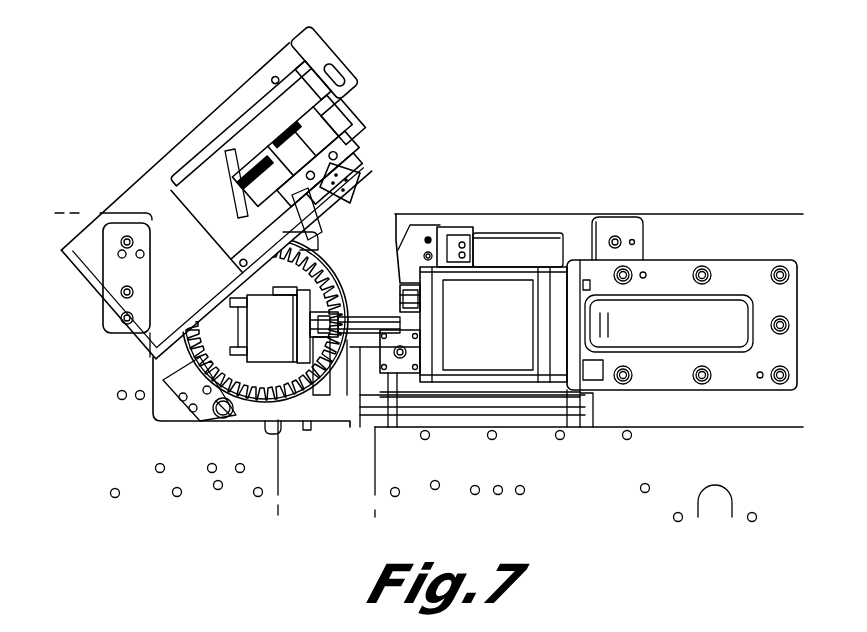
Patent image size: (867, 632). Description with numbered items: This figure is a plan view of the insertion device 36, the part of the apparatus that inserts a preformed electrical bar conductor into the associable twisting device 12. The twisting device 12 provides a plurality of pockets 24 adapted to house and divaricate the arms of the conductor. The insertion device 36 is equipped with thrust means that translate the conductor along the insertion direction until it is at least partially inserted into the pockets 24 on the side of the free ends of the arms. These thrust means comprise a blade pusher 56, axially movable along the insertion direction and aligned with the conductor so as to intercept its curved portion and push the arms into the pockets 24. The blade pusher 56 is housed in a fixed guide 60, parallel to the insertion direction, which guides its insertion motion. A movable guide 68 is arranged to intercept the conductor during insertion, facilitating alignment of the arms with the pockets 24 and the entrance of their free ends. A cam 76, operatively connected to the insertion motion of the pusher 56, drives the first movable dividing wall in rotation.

The twisting device 12 is at (190, 370).
The pockets 24 is at (258, 405).
The insertion device 36 is at (502, 177).
The blade pusher 56 is at (401, 361).
The fixed guide 60 is at (322, 343).
The movable guide 68 is at (350, 57).
The cam 76 is at (395, 276).